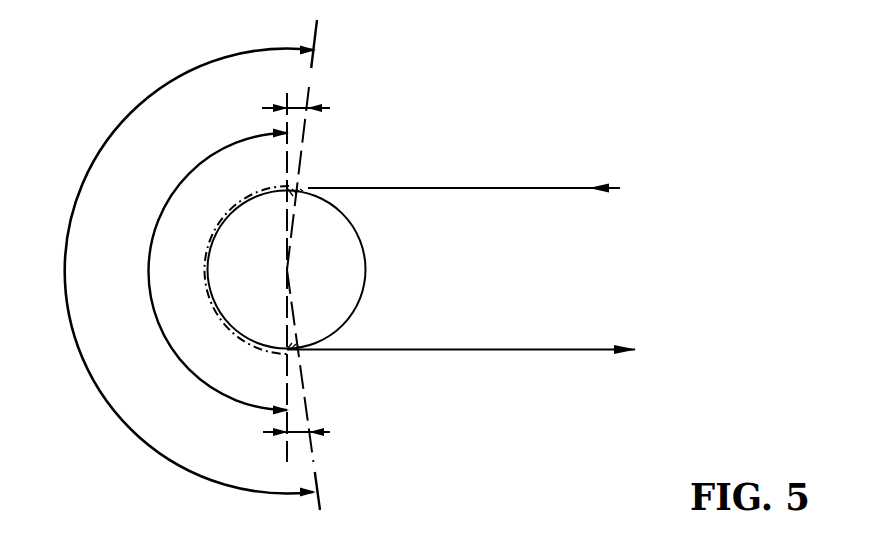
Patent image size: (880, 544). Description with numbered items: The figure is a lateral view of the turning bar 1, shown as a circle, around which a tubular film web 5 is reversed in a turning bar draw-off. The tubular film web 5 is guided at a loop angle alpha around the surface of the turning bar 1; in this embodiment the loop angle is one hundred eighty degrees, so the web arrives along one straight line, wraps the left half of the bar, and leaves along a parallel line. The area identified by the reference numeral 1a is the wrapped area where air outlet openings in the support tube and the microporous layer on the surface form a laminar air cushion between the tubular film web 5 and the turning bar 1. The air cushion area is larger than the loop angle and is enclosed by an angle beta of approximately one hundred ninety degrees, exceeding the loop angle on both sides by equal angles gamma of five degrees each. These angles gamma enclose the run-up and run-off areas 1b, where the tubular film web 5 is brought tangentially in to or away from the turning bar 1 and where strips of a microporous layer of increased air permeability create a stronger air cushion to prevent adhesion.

The turning bar 1 is at (366, 258).
The loop angle area 1a is at (228, 207).
The incoming and outgoing areas 1b is at (309, 190).
The tubular film web 5 is at (500, 188).